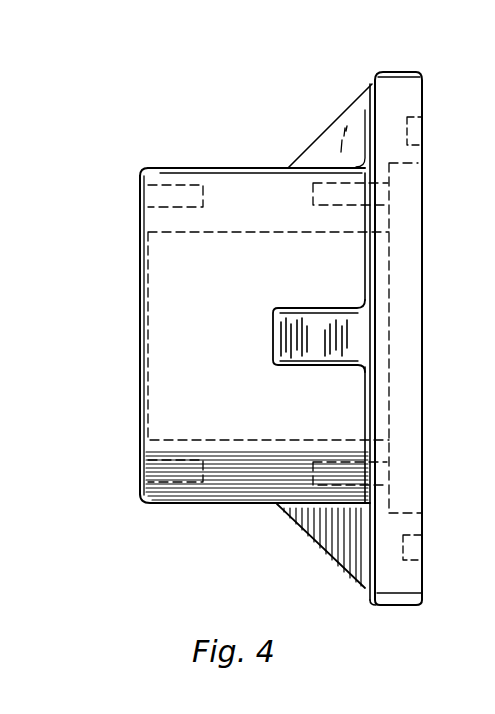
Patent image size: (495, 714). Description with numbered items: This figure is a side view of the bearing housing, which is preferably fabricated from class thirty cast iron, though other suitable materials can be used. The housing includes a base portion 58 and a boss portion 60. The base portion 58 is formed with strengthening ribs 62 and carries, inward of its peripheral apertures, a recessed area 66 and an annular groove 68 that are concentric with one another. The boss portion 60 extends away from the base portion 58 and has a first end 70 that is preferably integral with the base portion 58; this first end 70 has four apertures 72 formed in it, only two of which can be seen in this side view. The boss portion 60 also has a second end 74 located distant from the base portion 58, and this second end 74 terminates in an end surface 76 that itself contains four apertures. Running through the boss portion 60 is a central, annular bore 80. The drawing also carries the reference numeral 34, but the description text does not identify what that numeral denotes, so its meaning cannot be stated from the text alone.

The mounting bracket 34 is at (401, 75).
The base portion 58 is at (410, 568).
The boss portion 60 is at (222, 487).
The strengthening ribs 62 is at (347, 328).
The recessed area 66 is at (410, 195).
The annular groove 68 is at (422, 125).
The first end 70 is at (360, 512).
The apertures 72 is at (322, 183).
The second end 74 is at (140, 403).
The end surface 76 is at (140, 283).
The annular bore 80 is at (156, 333).